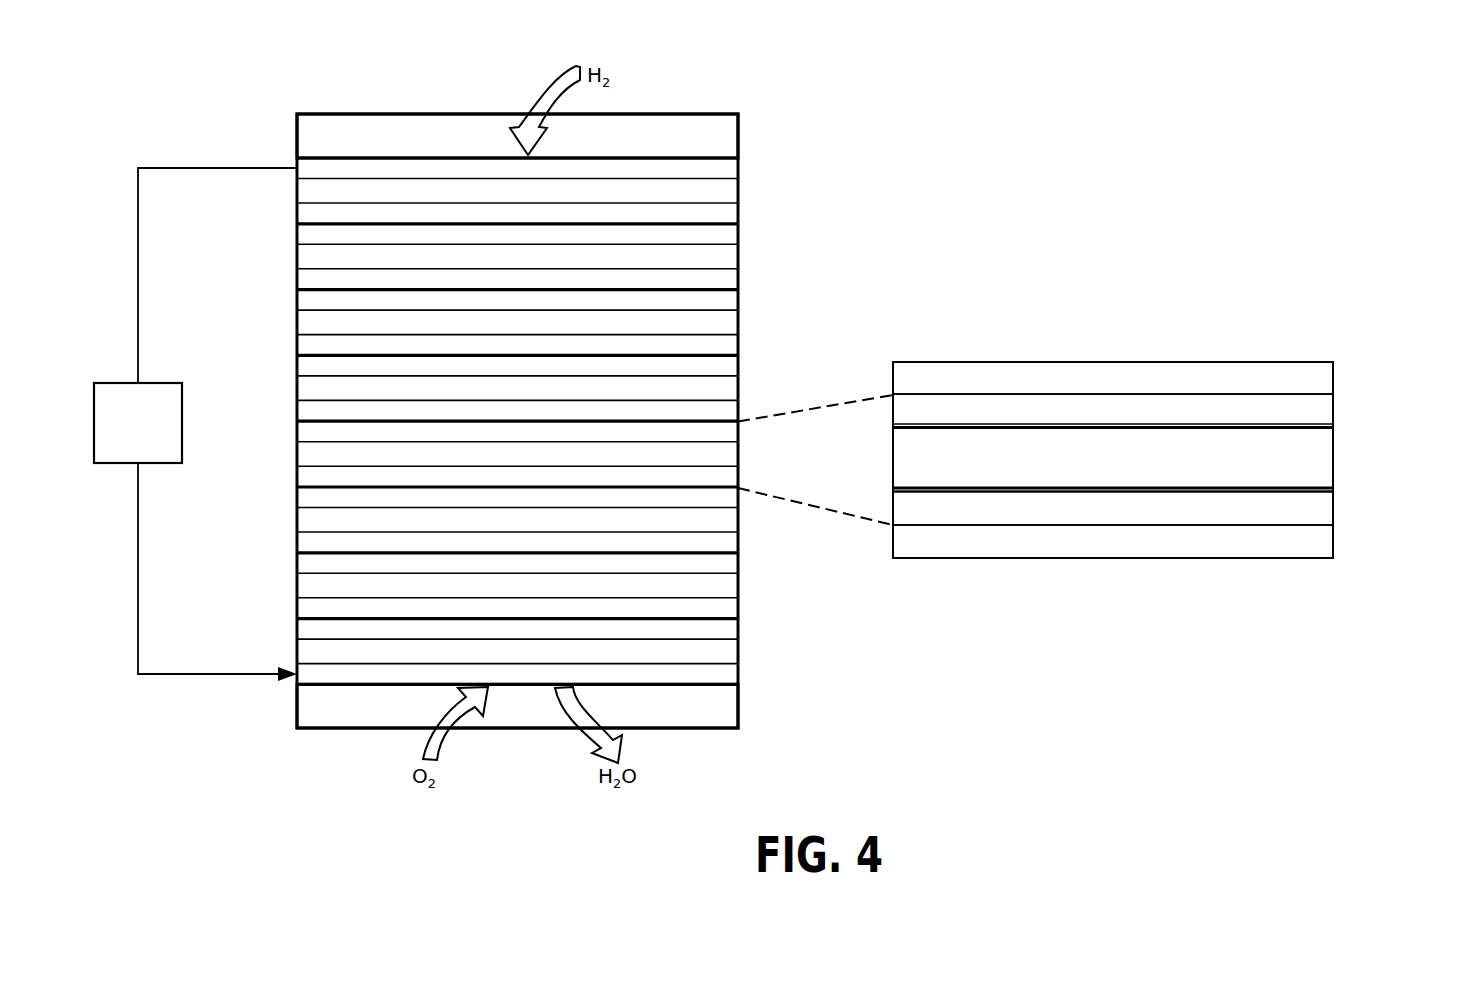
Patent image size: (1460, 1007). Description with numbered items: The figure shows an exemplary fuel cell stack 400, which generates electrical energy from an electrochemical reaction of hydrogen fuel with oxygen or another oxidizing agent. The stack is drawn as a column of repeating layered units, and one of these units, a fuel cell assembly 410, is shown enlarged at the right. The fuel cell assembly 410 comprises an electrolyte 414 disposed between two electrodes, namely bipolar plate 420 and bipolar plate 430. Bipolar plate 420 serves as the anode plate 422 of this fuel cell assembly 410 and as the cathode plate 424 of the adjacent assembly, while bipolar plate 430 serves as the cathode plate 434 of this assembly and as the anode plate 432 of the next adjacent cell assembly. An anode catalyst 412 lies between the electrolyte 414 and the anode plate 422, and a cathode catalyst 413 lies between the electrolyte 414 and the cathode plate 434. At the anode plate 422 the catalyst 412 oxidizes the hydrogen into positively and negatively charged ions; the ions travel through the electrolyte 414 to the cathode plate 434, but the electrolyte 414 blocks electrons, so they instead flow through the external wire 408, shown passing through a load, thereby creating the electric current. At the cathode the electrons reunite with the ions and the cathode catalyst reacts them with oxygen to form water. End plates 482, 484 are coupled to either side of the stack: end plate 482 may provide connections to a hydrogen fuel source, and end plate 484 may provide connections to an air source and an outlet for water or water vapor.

The fuel cell stack 400 is at (672, 87).
The wire 408 is at (156, 168).
The fuel cell assembly 410 is at (1168, 428).
The anode catalyst 412 is at (1333, 427).
The cathode catalyst 413 is at (1333, 491).
The electrolyte 414 is at (1323, 458).
The bipolar plate 420 is at (1168, 366).
The anode plate 422 is at (1293, 412).
The cathode plate 424 is at (1222, 375).
The bipolar plate 430 is at (1168, 557).
The anode plate 432 is at (1219, 546).
The cathode plate 434 is at (1298, 510).
The end plate 482 is at (740, 139).
The end plate 484 is at (740, 711).